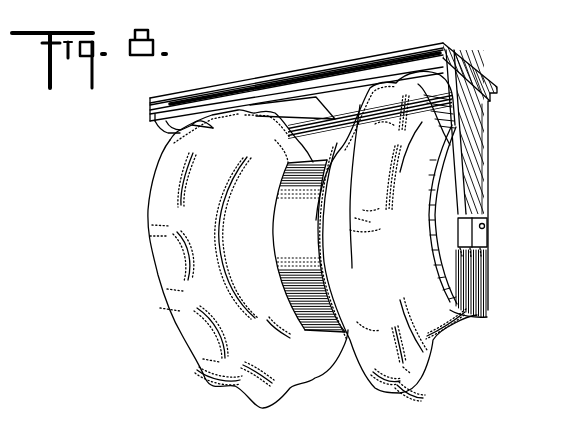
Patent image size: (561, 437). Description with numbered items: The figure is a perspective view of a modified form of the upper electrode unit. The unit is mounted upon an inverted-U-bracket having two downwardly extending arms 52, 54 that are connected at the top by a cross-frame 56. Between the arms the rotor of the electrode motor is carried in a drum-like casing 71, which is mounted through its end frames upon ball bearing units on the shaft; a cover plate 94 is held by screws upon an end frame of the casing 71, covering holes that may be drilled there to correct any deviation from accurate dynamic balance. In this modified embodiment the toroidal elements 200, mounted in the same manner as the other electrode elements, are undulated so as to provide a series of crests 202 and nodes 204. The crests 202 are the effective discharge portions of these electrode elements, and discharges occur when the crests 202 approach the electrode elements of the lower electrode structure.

The cross-frame 56 is at (297, 76).
The downwardly extending arm 52 is at (168, 133).
The downwardly extending arm 54 is at (478, 131).
The cover plate 94 is at (483, 269).
The drum-like casing 71 is at (314, 307).
The toroidal element 200 is at (156, 266).
The crest 202 is at (155, 218).
The node 204 is at (168, 177).